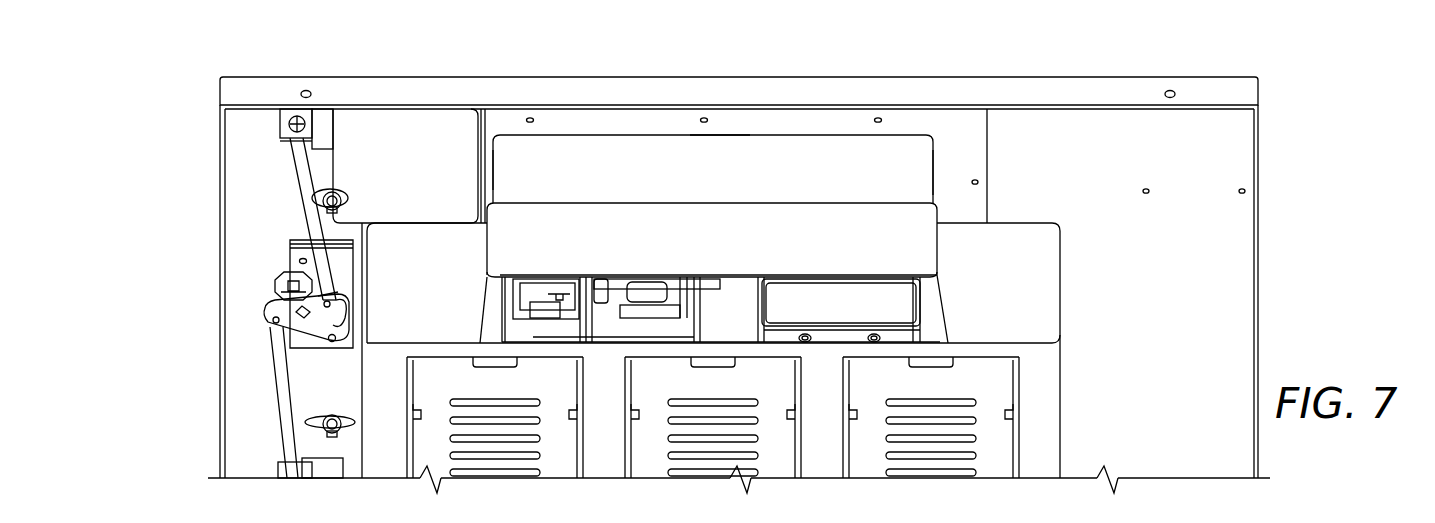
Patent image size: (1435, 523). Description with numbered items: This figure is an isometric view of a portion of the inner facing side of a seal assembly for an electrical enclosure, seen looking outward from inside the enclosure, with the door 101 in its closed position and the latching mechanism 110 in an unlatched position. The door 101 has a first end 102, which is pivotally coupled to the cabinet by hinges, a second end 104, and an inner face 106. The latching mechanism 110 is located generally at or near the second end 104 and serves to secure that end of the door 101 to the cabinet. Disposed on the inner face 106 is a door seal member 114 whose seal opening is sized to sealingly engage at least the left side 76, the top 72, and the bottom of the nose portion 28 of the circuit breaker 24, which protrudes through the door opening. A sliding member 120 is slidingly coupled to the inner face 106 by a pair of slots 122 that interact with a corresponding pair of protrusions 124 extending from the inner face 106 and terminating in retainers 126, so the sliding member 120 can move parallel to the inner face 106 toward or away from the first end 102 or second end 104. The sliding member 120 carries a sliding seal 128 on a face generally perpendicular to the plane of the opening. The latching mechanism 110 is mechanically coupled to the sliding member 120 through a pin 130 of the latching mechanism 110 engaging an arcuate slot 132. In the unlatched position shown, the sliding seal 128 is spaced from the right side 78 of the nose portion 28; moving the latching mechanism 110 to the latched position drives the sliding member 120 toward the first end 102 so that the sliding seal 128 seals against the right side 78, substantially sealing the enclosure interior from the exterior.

The circuit breaker 24 is at (744, 257).
The nose portion 28 is at (666, 172).
The top 72 is at (718, 137).
The left side 76 is at (930, 173).
The right side 78 is at (500, 168).
The door 101 is at (395, 95).
The first end 102 is at (1259, 147).
The second end 104 is at (219, 187).
The inner face 106 is at (1240, 260).
The latching mechanism 110 is at (273, 278).
The door seal member 114 is at (967, 141).
The sliding member 120 is at (460, 169).
The slots 122 is at (348, 198).
The protrusions 124 is at (322, 192).
The retainers 126 is at (347, 198).
The sliding seal 128 is at (487, 127).
The pin 130 is at (280, 326).
The arcuate slot 132 is at (338, 295).